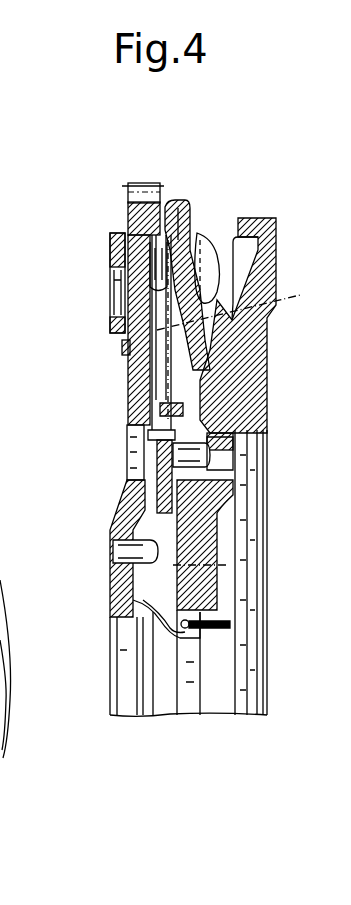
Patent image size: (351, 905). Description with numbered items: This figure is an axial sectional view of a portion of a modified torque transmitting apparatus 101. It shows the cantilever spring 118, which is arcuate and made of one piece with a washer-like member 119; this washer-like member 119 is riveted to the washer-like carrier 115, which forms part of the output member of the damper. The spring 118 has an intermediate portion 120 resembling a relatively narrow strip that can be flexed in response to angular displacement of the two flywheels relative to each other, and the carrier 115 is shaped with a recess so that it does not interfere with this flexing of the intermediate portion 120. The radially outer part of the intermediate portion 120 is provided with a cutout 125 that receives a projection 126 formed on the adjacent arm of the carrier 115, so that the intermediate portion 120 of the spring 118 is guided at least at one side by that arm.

The torque transmitting apparatus 101 is at (234, 196).
The washer-like carrier 115 is at (180, 483).
The cantilever spring 118 is at (162, 350).
The washer-like member 119 is at (157, 440).
The intermediate portion 120 is at (270, 298).
The cutout 125 is at (170, 200).
The projection 126 is at (112, 300).